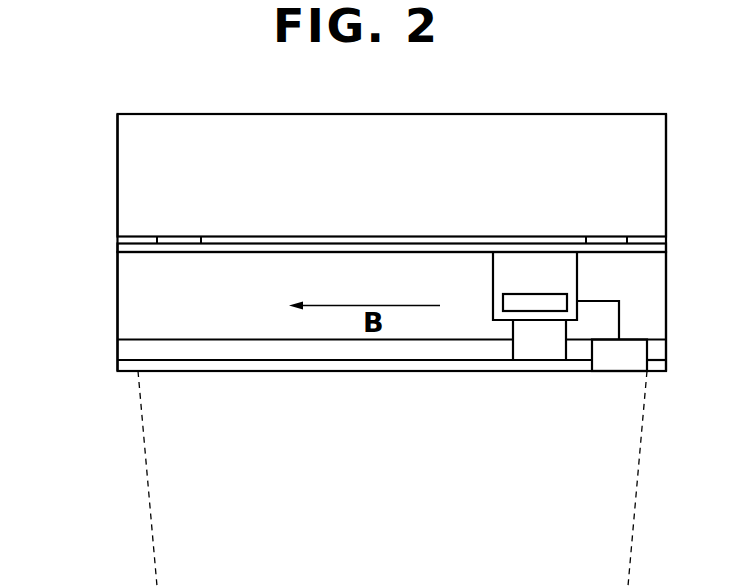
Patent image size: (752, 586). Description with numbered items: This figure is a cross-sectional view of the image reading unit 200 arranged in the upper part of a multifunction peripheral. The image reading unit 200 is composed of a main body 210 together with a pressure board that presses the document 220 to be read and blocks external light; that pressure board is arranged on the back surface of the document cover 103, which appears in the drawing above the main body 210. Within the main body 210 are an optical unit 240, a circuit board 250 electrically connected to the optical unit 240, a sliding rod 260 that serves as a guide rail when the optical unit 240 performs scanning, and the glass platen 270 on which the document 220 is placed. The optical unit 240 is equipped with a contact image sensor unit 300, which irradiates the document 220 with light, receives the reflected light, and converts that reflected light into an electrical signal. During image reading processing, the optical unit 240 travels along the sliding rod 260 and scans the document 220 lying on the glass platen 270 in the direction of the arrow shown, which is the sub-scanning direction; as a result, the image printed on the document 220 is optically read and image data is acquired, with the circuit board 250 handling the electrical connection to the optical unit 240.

The image reading unit 200 is at (413, 96).
The document cover 103 is at (117, 133).
The document 220 is at (117, 248).
The main body 210 is at (117, 310).
The optical unit 240 is at (535, 262).
The contact image sensor (CIS) unit 300 is at (543, 307).
The glass platen 270 is at (231, 253).
The sliding rod 260 is at (393, 355).
The circuit board 250 is at (609, 360).